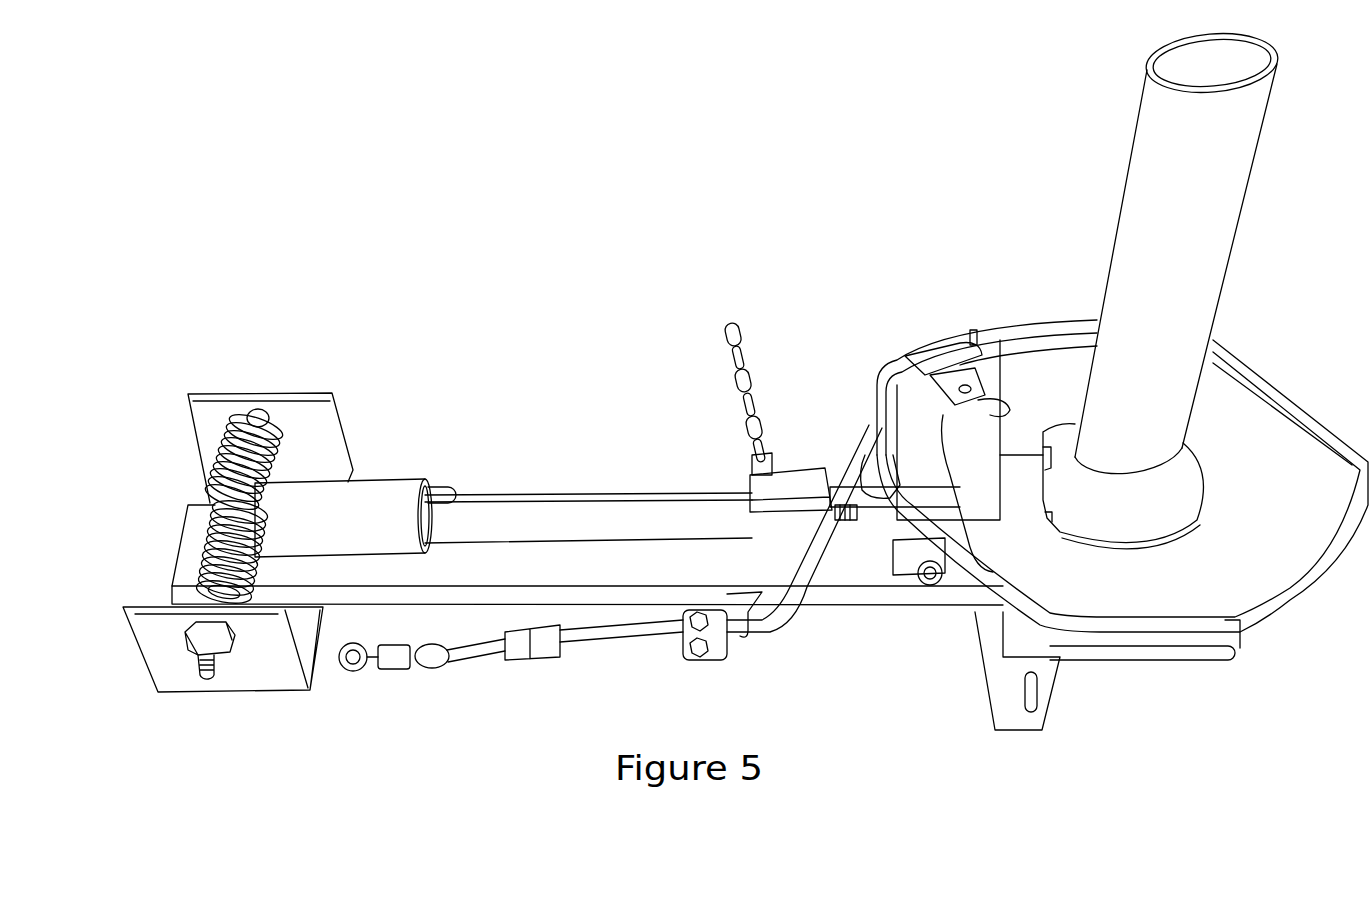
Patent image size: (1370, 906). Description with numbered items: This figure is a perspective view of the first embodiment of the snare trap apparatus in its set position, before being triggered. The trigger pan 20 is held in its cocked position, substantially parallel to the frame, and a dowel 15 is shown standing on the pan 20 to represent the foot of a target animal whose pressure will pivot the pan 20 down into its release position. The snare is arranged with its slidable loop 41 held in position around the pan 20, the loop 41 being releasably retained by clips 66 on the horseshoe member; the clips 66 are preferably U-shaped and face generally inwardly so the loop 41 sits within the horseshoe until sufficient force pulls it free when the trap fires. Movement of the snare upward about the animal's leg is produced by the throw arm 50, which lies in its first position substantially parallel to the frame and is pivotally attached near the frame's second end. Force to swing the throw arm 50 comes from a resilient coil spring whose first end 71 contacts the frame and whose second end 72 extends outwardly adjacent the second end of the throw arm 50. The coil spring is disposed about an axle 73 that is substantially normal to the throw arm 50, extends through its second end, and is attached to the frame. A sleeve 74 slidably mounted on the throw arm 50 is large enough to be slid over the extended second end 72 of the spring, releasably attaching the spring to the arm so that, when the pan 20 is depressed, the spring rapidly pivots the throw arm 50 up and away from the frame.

The dowel 15 is at (1148, 178).
The pan 20 is at (1175, 513).
The slidable loop 41 is at (1160, 625).
The throw arm 50 is at (630, 500).
The clips 66 is at (973, 580).
The first end of the spring 71 is at (270, 432).
The second end of the spring 72 is at (452, 492).
The axle 73 is at (202, 680).
The sleeve 74 is at (387, 493).